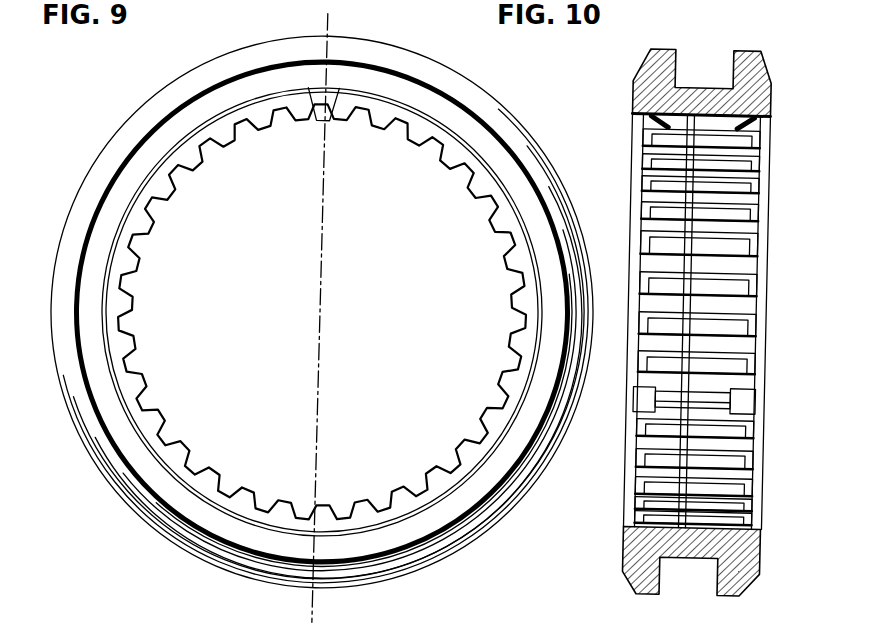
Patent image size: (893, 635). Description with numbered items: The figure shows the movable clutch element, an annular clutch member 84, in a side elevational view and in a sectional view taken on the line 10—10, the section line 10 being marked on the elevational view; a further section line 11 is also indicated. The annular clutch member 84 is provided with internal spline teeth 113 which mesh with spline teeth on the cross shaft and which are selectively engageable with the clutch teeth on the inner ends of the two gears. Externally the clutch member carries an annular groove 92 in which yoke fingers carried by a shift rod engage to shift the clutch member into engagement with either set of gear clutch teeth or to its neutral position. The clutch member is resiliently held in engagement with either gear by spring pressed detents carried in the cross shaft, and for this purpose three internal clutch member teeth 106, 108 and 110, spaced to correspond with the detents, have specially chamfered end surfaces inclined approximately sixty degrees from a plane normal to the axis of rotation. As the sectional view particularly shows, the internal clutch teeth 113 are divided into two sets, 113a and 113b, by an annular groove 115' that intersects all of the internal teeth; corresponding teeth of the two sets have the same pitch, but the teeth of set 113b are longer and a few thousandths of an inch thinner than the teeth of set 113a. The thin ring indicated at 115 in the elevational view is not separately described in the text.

In FIG. 9, the annular clutch member 84 is at (322, 312).
In FIG. 10, the annular clutch member 84 is at (622, 570).
In FIG. 10, the annular groove 92 is at (691, 318).
In FIG. 9, the internal clutch member tooth 106 is at (232, 82).
In FIG. 10, the internal clutch member tooth 106 is at (762, 392).
In FIG. 9, the internal clutch member tooth 108 is at (276, 74).
In FIG. 10, the internal clutch member tooth 108 is at (646, 124).
In FIG. 9, the internal clutch member tooth 110 is at (322, 312).
In FIG. 9, the internal spline teeth 113 is at (322, 312).
In FIG. 10, the internal spline teeth 113 is at (691, 326).
In FIG. 10, the first set of internal clutch teeth 113a is at (651, 447).
In FIG. 10, the second set of internal clutch teeth 113b is at (744, 448).
In FIG. 9, the inner thin ring 115 is at (359, 312).
In FIG. 10, the annular groove 115' is at (635, 320).
In FIG. 9, the section line 10— 10 is at (322, 316).
In FIG. 9, the section line 11- 11 is at (202, 618).